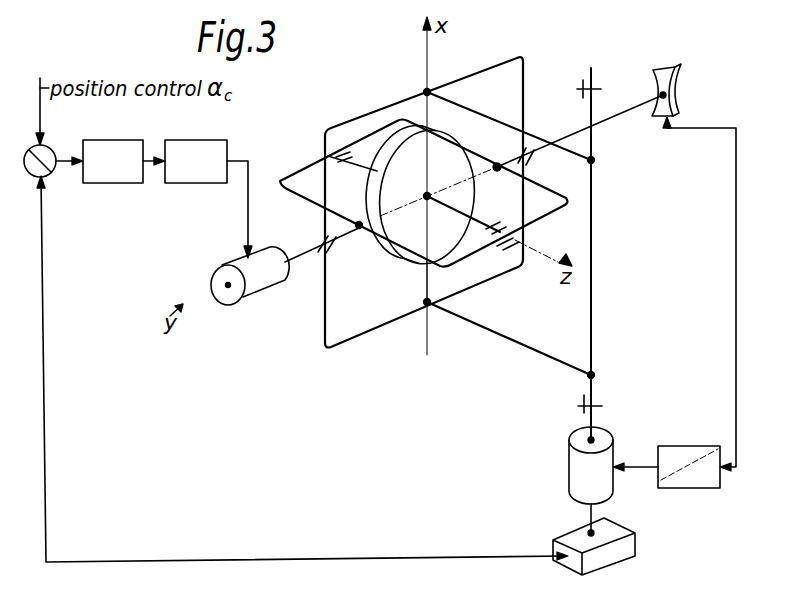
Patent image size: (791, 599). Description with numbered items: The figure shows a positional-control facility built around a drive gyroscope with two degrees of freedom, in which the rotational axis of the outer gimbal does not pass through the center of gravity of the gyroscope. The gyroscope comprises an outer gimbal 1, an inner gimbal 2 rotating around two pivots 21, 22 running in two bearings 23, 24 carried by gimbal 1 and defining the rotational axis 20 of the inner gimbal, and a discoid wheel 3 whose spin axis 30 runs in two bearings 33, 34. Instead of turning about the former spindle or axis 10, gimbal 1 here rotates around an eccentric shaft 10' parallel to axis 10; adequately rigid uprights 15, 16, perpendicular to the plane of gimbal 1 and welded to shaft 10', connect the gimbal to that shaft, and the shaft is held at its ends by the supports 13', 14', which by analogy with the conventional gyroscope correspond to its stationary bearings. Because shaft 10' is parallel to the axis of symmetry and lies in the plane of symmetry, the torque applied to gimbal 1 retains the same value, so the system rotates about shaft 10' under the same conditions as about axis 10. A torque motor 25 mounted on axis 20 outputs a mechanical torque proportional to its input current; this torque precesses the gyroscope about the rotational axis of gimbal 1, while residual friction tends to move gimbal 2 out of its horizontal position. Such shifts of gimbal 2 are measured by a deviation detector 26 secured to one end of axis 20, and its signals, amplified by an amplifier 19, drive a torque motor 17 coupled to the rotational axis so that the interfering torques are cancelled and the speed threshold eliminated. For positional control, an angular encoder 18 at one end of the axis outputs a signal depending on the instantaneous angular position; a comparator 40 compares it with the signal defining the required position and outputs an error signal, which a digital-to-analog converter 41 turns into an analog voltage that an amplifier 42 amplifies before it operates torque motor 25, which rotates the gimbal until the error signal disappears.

The outer gimbal 1 is at (511, 56).
The inner gimbal 2 is at (555, 208).
The discoid wheel 3 is at (455, 134).
The precession axis 10 is at (409, 281).
The rotational shaft of gimbal 1 10' is at (611, 254).
The coupling 13' is at (608, 387).
The coupling 14' is at (603, 70).
The upright 15 is at (493, 329).
The upright 16 is at (471, 118).
The torque motor 17 is at (570, 467).
The angular encoder 18 is at (630, 544).
The amplifier 19 is at (677, 447).
The rotational axis of the inner gimbal 20 is at (483, 164).
The pivot 21 is at (298, 256).
The pivot 22 is at (557, 142).
The bearing 23 is at (318, 240).
The bearing 24 is at (530, 160).
The torque motor 25 is at (264, 290).
The deviation detector 26 is at (667, 66).
The spin axis 30 is at (487, 222).
The bearing 33 is at (499, 250).
The bearing 34 is at (337, 162).
The comparator 40 is at (52, 177).
The digital-to-analog converter 41 is at (112, 184).
The amplifier 42 is at (197, 184).